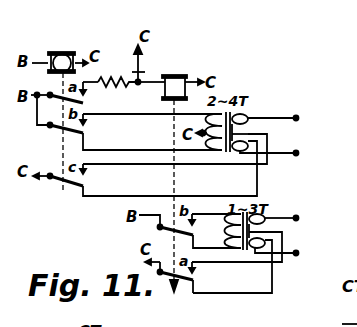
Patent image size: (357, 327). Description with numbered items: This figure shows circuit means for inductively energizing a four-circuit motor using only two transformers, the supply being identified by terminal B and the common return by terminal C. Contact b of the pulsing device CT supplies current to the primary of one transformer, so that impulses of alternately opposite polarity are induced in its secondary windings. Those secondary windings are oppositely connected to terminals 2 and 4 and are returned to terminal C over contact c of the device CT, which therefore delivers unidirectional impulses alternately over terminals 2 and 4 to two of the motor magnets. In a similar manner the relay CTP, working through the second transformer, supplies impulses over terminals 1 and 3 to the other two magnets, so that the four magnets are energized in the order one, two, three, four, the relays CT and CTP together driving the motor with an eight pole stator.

The terminal 1 is at (283, 209).
The terminal 2 is at (275, 107).
The terminal 3 is at (279, 243).
The terminal 4 is at (271, 144).
The pulsing device CT is at (60, 109).
The relay CTP is at (173, 172).